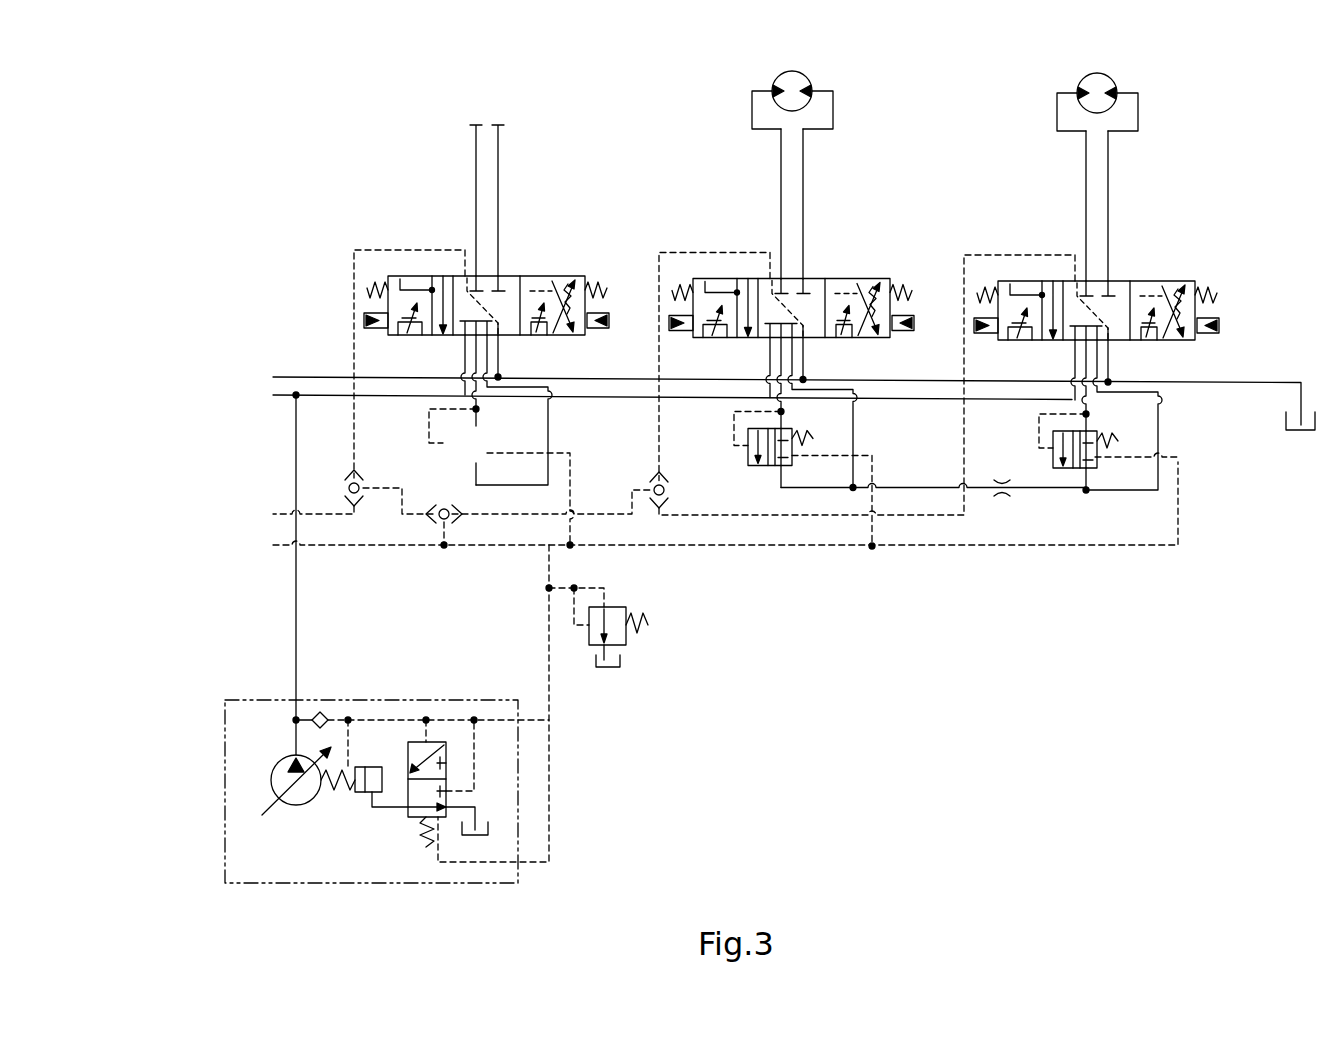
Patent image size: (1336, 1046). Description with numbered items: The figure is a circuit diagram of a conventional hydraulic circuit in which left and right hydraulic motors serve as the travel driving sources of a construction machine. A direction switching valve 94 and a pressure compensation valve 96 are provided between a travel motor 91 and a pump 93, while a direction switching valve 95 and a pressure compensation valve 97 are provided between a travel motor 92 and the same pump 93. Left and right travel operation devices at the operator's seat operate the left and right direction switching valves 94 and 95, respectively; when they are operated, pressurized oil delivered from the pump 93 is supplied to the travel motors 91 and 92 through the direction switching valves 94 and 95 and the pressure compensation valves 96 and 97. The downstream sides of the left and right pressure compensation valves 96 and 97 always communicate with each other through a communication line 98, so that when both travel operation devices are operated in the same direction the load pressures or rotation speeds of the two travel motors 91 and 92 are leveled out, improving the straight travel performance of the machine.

The travel motor 91 is at (792, 71).
The travel motor 92 is at (1097, 73).
The pump 93 is at (270, 774).
The direction switching valve 94 is at (791, 268).
The direction switching valve 95 is at (1096, 270).
The pressure compensation valve 96 is at (751, 465).
The pressure compensation valve 97 is at (1048, 449).
The communication line 98 is at (1054, 490).